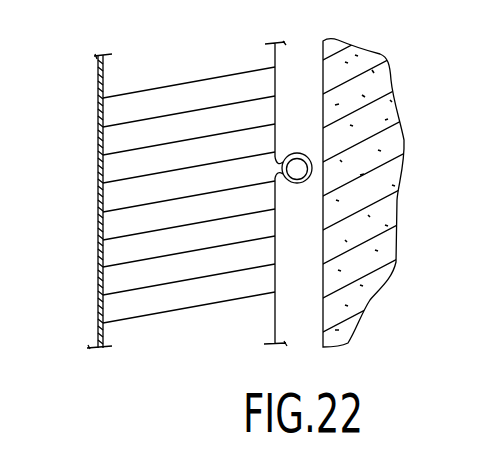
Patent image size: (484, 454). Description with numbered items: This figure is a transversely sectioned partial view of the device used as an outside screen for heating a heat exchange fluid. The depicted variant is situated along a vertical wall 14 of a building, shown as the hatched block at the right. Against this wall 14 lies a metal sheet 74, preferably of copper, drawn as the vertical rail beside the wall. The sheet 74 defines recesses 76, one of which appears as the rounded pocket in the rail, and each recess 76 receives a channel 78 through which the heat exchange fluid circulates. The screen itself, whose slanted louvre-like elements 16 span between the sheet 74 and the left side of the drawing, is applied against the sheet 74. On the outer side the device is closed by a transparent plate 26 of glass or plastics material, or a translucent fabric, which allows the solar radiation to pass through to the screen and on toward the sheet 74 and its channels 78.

The vertical wall 14 is at (353, 285).
The slats 16 is at (167, 136).
The transparent plate 26 is at (98, 140).
The metal sheet 74 is at (274, 87).
The recesses 76 is at (298, 153).
The channels 78 is at (298, 177).